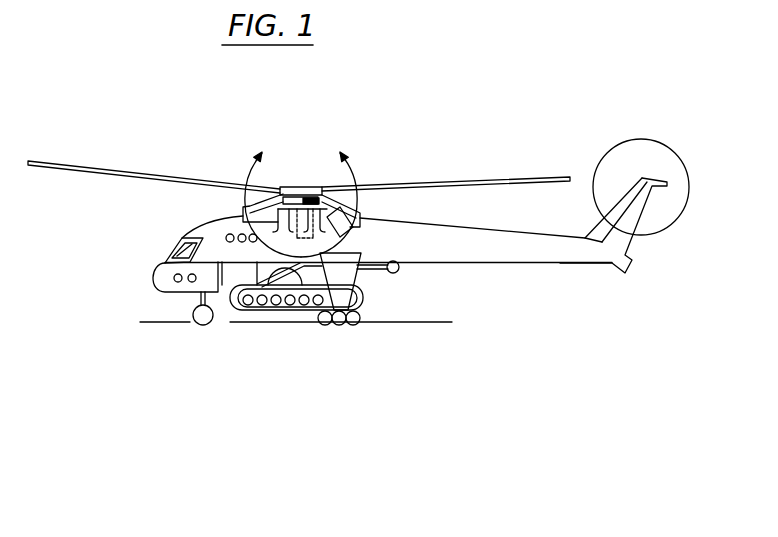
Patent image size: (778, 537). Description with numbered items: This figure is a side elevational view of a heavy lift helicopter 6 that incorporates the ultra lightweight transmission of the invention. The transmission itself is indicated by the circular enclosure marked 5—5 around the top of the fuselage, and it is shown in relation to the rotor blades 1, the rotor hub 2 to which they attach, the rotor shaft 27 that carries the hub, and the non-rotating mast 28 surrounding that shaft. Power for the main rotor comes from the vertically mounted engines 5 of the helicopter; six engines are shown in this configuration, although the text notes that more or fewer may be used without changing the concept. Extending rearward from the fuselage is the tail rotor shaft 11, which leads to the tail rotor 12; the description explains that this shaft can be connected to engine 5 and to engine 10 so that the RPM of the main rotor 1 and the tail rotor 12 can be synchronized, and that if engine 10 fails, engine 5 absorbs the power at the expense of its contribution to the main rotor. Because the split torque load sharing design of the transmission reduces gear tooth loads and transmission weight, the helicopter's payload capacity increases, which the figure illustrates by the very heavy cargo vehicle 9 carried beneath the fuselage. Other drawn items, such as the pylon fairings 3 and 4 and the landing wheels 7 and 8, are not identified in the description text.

The rotor blades 1 is at (67, 165).
The rotor hub 2 is at (292, 187).
The rotor pylon left fairing 3 is at (245, 200).
The rotor pylon right fairing 4 is at (360, 218).
The vertically mounted engines 5 is at (143, 237).
The heavy lift helicopter 6 is at (152, 272).
The nose wheel 7 is at (197, 326).
The rear wheels 8 is at (338, 328).
The vehicle 9 is at (283, 312).
The engine 10 is at (338, 244).
The tail rotor shaft 11 is at (515, 232).
The tail rotor 12 is at (670, 143).
The rotor shaft 27 is at (325, 198).
The non-rotating mast 28 is at (290, 234).